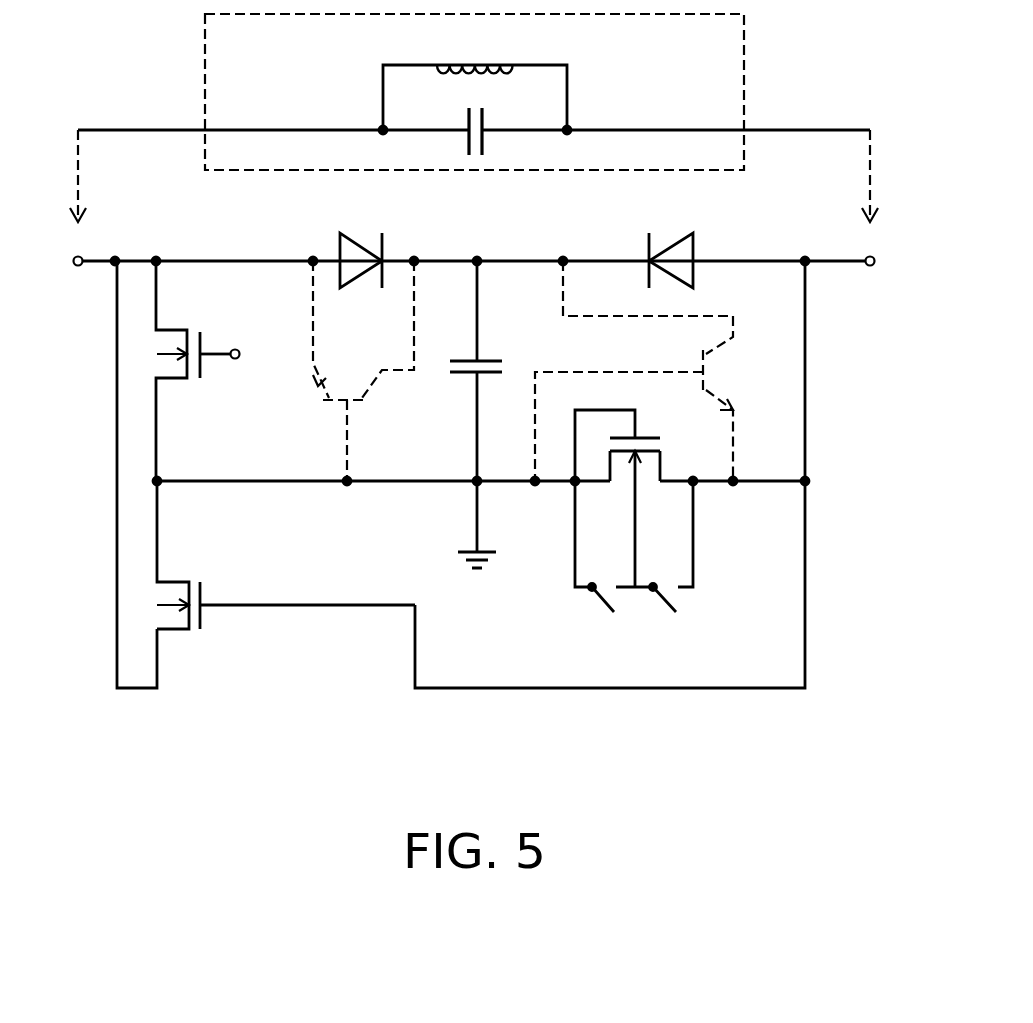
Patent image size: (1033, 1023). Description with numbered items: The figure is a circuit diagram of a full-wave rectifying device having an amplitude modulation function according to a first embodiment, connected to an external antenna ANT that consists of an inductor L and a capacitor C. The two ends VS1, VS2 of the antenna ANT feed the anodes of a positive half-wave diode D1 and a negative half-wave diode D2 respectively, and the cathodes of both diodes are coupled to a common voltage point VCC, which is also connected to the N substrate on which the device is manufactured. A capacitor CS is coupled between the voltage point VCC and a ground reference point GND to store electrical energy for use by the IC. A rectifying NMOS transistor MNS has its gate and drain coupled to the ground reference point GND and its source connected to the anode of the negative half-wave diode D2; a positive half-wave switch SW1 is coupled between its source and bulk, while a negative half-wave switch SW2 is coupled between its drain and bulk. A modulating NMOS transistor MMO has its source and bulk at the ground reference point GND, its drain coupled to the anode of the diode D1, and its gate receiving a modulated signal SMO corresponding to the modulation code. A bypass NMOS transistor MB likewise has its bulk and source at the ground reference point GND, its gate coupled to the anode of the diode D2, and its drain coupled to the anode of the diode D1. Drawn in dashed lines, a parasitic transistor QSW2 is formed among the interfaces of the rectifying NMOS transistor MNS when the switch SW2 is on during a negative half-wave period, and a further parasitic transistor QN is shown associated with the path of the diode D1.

The antenna ANT is at (474, 118).
The inductor L is at (475, 81).
The capacitor C is at (488, 124).
The end of antenna VS1 is at (54, 265).
The end of antenna VS2 is at (895, 265).
The positive half-wave diode D1 is at (357, 238).
The negative half-wave diode D2 is at (671, 238).
The voltage point VCC is at (473, 289).
The capacitor CS is at (465, 402).
The ground reference point GND is at (476, 547).
The modulating NMOS transistor MMO is at (189, 371).
The modulated signal SMO is at (246, 356).
The bypass NMOS transistor MB is at (286, 581).
The parasitic NPN transistor QN is at (363, 371).
The parasitic transistor QSW2 is at (665, 371).
The rectifying NMOS transistor MNS is at (632, 496).
The positive half-wave switch SW1 is at (676, 565).
The negative half-wave switch SW2 is at (599, 565).